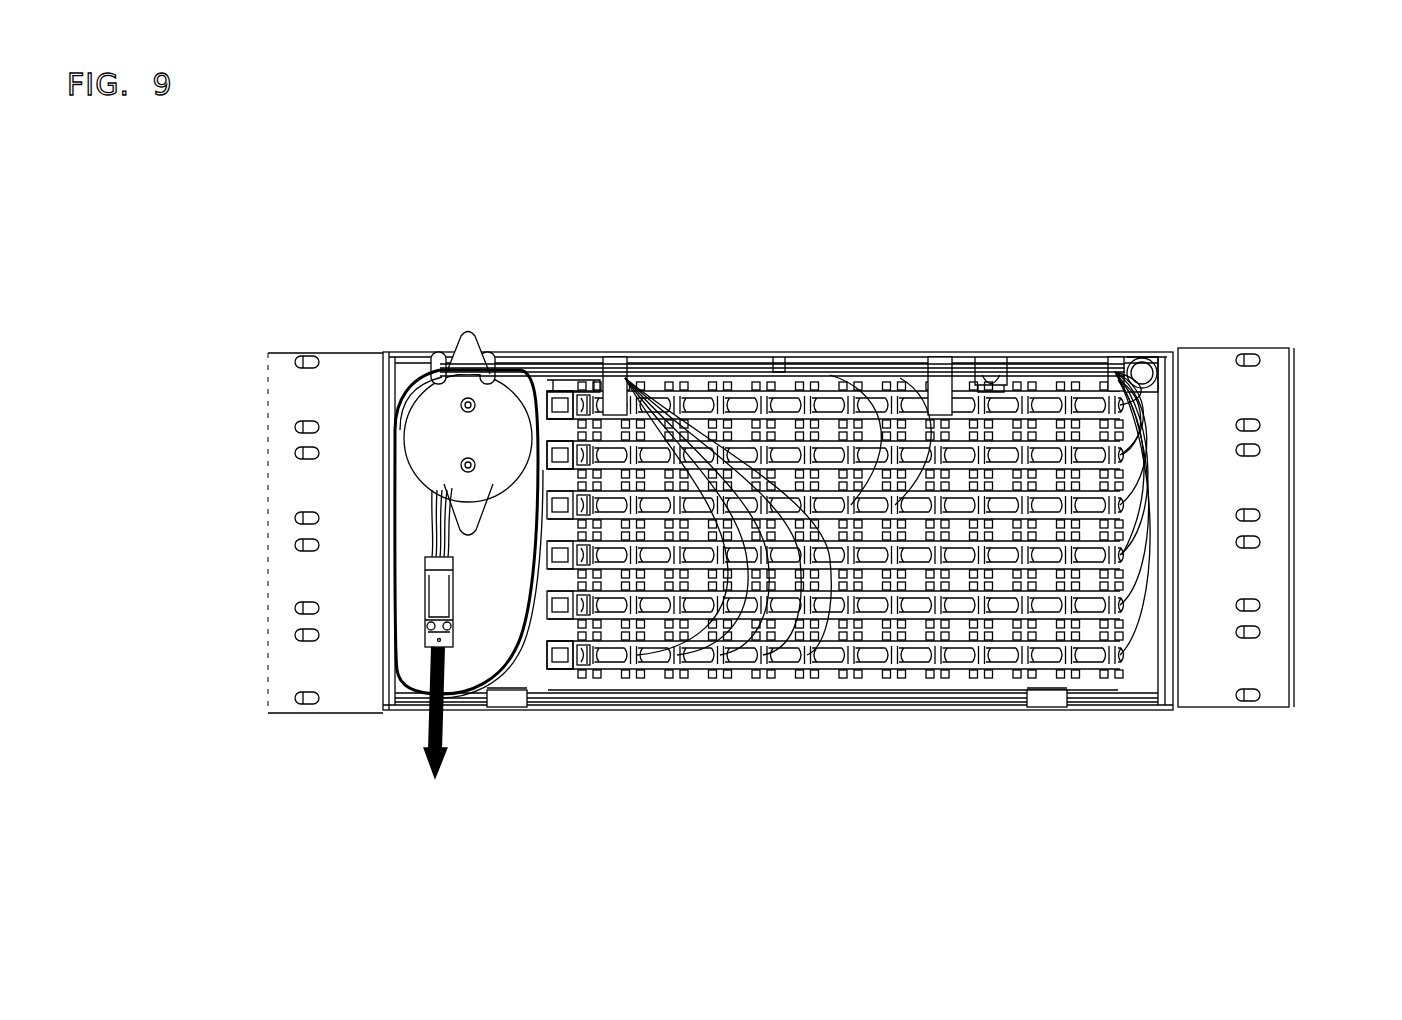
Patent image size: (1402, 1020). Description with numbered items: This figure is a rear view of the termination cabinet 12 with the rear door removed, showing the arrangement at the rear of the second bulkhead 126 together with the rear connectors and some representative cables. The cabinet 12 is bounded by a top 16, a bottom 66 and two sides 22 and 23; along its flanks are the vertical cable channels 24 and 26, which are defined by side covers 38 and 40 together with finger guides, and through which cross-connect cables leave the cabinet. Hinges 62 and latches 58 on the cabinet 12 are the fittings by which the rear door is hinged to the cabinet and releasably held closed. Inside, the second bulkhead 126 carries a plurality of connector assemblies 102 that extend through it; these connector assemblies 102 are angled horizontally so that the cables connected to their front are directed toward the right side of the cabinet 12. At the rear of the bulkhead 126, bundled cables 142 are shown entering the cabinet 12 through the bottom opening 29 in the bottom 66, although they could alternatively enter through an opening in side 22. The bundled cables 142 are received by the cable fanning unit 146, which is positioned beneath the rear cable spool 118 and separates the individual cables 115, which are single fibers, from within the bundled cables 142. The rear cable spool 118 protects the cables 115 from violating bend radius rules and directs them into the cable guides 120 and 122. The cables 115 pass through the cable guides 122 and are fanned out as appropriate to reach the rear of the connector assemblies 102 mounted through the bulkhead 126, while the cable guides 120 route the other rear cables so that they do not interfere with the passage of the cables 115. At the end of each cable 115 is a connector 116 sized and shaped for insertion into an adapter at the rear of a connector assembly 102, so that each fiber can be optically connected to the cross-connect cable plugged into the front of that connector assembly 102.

The termination cabinet 12 is at (1302, 730).
The top 16 is at (826, 352).
The side 22 is at (385, 530).
The side 23 is at (1178, 597).
The vertical cable channel 24 is at (318, 332).
The vertical cable channel 26 is at (1210, 330).
The bottom opening 29 is at (446, 718).
The side cover 38 is at (268, 585).
The side cover 40 is at (1294, 553).
The latch 58 is at (578, 378).
The hinge 62 is at (507, 707).
The bottom 66 is at (838, 705).
The connector assembly 102 is at (562, 405).
The rear cable 115 is at (420, 372).
The connector 116 is at (878, 455).
The rear cable spool 118 is at (457, 448).
The cable guide 120 is at (777, 363).
The cable guide 122 is at (617, 358).
The second bulkhead 126 is at (885, 690).
The bundled cable 142 is at (428, 700).
The cable fanning unit 146 is at (440, 590).